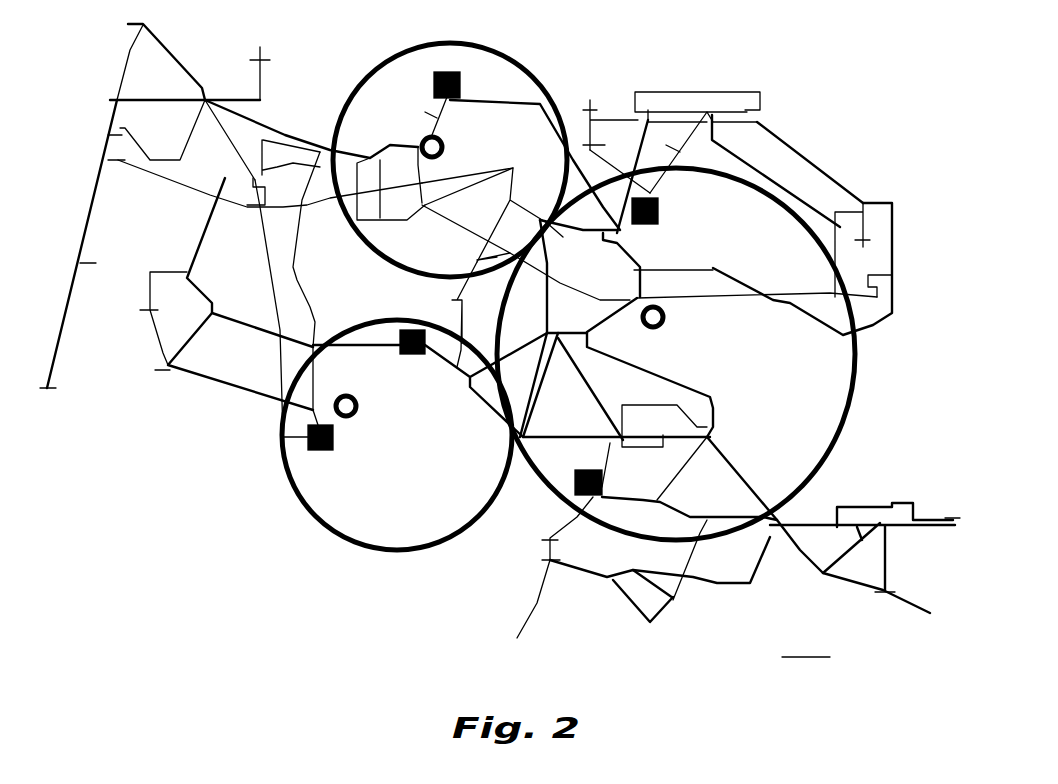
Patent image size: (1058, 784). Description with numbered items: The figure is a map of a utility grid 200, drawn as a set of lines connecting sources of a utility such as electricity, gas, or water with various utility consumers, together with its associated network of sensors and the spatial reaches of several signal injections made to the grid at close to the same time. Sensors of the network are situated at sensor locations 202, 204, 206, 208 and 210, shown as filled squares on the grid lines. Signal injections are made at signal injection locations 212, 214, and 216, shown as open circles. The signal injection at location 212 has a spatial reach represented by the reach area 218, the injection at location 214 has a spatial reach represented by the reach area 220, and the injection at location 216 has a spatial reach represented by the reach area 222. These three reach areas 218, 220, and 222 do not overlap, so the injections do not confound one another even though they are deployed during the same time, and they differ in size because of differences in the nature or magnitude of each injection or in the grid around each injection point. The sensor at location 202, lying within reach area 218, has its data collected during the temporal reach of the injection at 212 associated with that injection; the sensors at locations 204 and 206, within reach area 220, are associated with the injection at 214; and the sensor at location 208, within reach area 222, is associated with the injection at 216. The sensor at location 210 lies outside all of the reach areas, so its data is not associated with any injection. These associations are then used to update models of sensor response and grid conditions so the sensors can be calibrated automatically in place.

The utility grid 200 is at (500, 341).
The sensor location 202 is at (471, 85).
The sensor location 204 is at (340, 454).
The sensor location 206 is at (406, 361).
The sensor location 208 is at (616, 482).
The sensor location 210 is at (672, 219).
The signal injection location 212 is at (458, 151).
The signal injection location 214 is at (374, 406).
The signal injection location 216 is at (677, 330).
The reach area 218 is at (443, 163).
The reach area 220 is at (397, 453).
The reach area 222 is at (687, 354).